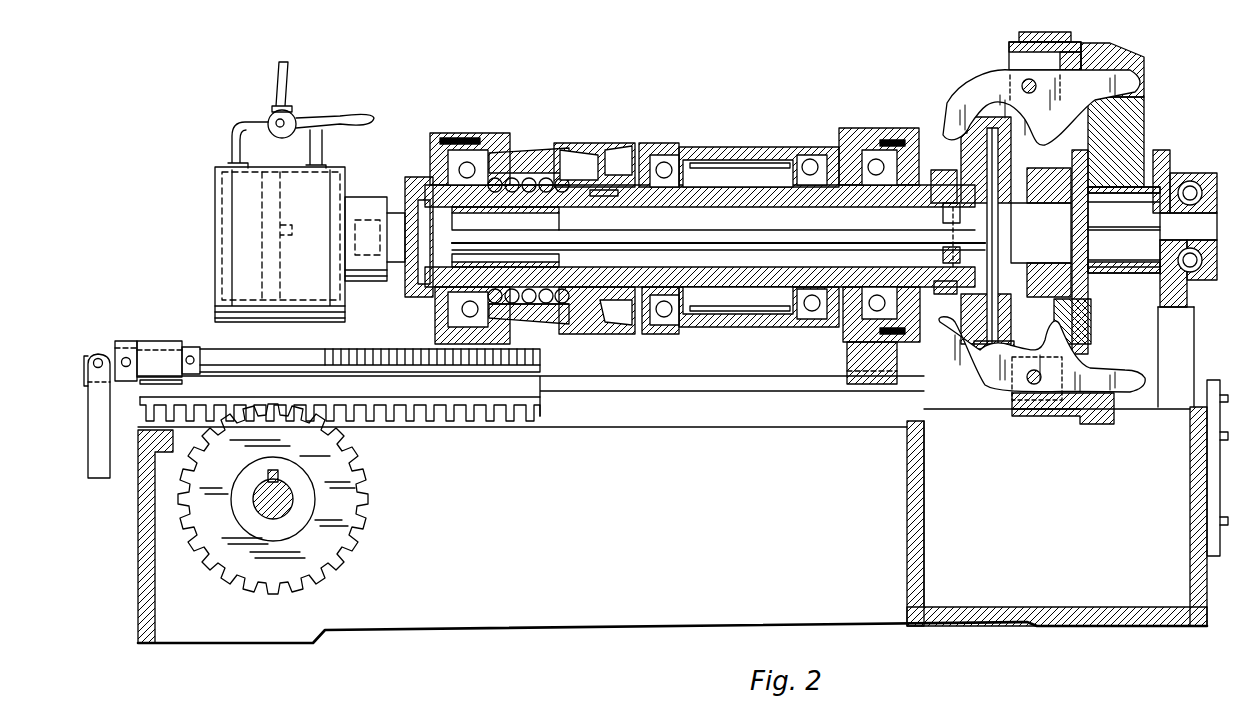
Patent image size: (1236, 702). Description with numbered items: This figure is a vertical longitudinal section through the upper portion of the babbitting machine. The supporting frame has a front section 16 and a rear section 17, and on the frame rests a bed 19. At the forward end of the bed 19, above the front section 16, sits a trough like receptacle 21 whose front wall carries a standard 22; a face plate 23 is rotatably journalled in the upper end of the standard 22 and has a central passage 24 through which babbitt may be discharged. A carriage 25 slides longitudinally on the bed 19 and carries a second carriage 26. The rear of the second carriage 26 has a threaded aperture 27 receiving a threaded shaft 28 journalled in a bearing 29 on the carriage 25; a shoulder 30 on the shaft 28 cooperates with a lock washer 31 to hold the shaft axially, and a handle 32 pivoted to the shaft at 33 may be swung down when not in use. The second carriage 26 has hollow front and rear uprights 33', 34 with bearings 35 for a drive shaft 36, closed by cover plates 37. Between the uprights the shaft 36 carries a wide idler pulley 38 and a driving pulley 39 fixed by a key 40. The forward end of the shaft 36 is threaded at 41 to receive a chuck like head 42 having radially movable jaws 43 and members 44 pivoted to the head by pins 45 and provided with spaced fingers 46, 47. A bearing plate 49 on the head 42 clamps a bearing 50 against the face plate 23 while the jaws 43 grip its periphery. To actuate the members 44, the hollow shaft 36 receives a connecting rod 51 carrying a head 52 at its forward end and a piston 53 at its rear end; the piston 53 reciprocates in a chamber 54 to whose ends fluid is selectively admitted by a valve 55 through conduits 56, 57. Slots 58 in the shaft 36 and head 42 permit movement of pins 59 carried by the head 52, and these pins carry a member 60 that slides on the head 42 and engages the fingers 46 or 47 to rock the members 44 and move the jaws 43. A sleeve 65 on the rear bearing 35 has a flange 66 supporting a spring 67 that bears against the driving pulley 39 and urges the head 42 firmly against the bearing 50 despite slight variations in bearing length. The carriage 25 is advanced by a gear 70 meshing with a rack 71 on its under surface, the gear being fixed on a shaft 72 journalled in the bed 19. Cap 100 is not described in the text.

The front section 16 is at (1196, 580).
The rear section 17 is at (138, 592).
The bed 19 is at (580, 626).
The trough like receptacle 21 is at (952, 604).
The standard 22 is at (1204, 386).
The face plate 23 is at (1165, 152).
The passage 24 is at (1220, 240).
The carriage 25 is at (143, 440).
The second carriage 26 is at (556, 342).
The threaded aperture 27 is at (478, 380).
The threaded shaft 28 is at (355, 358).
The bearing 29 is at (160, 340).
The shoulder 30 is at (196, 346).
The lock washer 31 is at (124, 340).
The handle 32 is at (93, 415).
The pivot 33 is at (84, 338).
The front upright 33' is at (883, 206).
The rear upright 34 is at (490, 133).
The bearings 35 is at (842, 136).
The drive shaft 36 is at (664, 155).
The cover plates 37 is at (425, 166).
The idler pulley 38 is at (724, 147).
The driving pulley 39 is at (597, 143).
The key 40 is at (614, 160).
The threaded forward end 41 is at (1038, 265).
The head 42 is at (1125, 120).
The jaws 43 is at (1142, 128).
The members 44 is at (1100, 424).
The pins 45 is at (1030, 424).
The fingers 46 is at (1000, 390).
The fingers 47 is at (945, 378).
The bearing plate 49 is at (1155, 296).
The bearing 50 is at (1210, 168).
The connecting rod 51 is at (728, 236).
The head 52 is at (940, 260).
The piston 53 is at (262, 248).
The chamber 54 is at (234, 187).
The valve 55 is at (266, 118).
The conduit 56 is at (320, 138).
The conduit 57 is at (232, 146).
The slots 58 is at (975, 128).
The pins 59 is at (985, 100).
The member 60 is at (963, 100).
The sleeve 65 is at (470, 152).
The flange 66 is at (520, 152).
The spring 67 is at (555, 160).
The gear 70 is at (345, 503).
The rack 71 is at (398, 408).
The shaft 72 is at (273, 510).
The cap 100 is at (1072, 31).